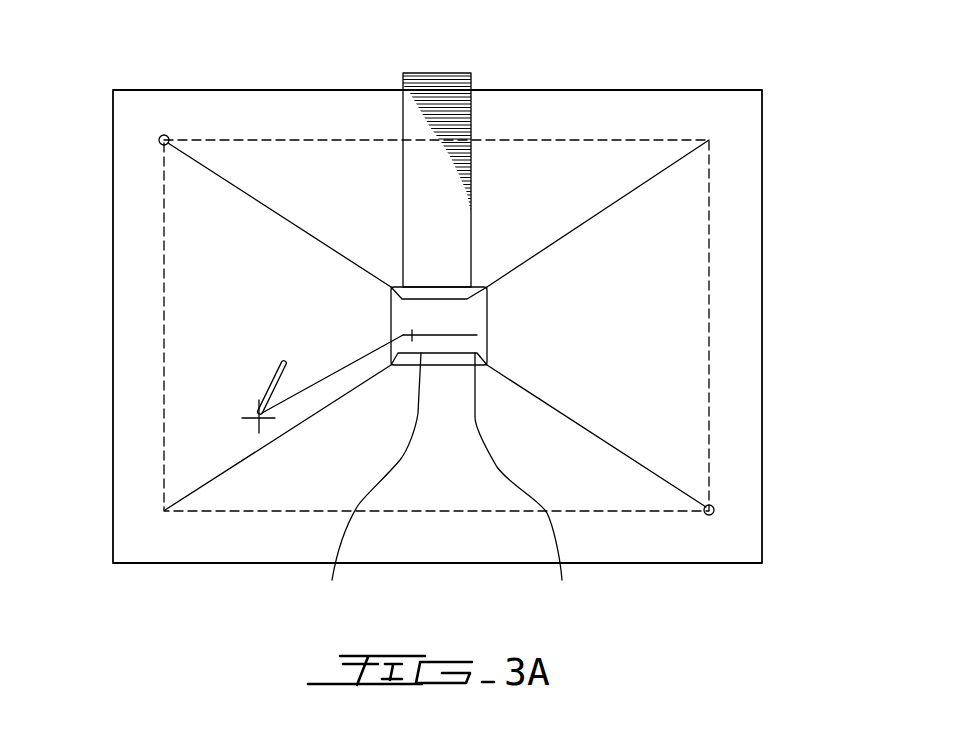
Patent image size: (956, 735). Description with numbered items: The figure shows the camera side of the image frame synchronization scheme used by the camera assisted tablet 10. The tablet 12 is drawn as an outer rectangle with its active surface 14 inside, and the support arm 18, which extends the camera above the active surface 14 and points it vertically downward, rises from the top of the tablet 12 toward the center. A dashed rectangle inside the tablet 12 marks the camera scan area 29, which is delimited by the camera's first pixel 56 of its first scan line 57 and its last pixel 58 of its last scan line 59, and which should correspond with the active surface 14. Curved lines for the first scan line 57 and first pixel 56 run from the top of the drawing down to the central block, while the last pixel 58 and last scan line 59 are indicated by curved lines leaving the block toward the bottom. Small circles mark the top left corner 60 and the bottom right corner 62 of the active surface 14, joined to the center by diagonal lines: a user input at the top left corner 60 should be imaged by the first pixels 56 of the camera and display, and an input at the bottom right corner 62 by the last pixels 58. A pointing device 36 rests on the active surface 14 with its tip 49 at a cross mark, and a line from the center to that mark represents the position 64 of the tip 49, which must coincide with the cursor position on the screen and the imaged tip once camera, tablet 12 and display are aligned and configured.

The camera assisted tablet 10 is at (113, 162).
The tablet 12 is at (762, 147).
The active surface 14 is at (670, 273).
The support arm 18 is at (415, 110).
The camera scan area 29 is at (650, 176).
The pointing device 36 is at (273, 375).
The tip 49 is at (258, 412).
The first pixel 56 is at (395, 287).
The first scan line 57 is at (471, 288).
The last pixel 58 is at (529, 490).
The last scan line 59 is at (366, 490).
The top left corner 60 is at (164, 135).
The bottom right corner 62 is at (714, 509).
The position 64 is at (257, 418).